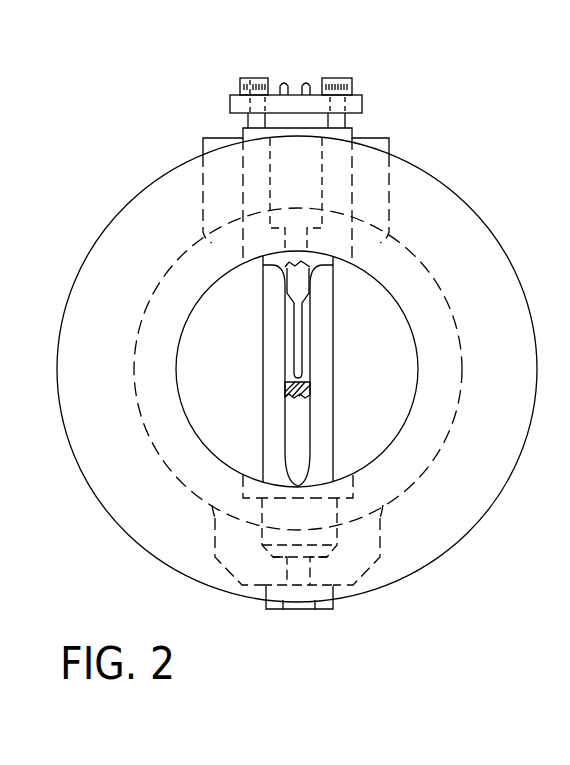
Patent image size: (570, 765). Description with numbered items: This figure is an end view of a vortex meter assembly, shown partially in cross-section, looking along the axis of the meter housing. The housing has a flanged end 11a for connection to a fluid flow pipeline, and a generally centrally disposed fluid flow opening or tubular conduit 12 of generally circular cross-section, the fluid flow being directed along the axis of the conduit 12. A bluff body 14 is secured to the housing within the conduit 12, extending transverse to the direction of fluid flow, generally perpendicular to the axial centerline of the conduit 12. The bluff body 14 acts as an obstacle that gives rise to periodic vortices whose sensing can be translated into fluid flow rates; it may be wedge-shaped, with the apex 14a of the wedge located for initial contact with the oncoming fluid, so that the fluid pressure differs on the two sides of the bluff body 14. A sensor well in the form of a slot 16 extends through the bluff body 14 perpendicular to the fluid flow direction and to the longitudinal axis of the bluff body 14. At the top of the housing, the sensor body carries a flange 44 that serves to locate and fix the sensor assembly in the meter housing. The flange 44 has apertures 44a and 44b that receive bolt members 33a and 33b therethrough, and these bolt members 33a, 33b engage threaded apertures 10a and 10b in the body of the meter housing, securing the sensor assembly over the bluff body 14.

The threaded aperture 10a is at (205, 180).
The threaded aperture 10b is at (352, 157).
The flanged end 11a is at (440, 182).
The fluid flow opening or tubular conduit 12 is at (412, 350).
The bluff body 14 is at (263, 356).
The apex of the wedge 14a is at (285, 430).
The slot 16 is at (312, 331).
The bolt member 33a is at (251, 78).
The bolt member 33b is at (337, 78).
The flange 44 is at (362, 100).
The aperture 44a is at (232, 104).
The aperture 44b is at (362, 108).